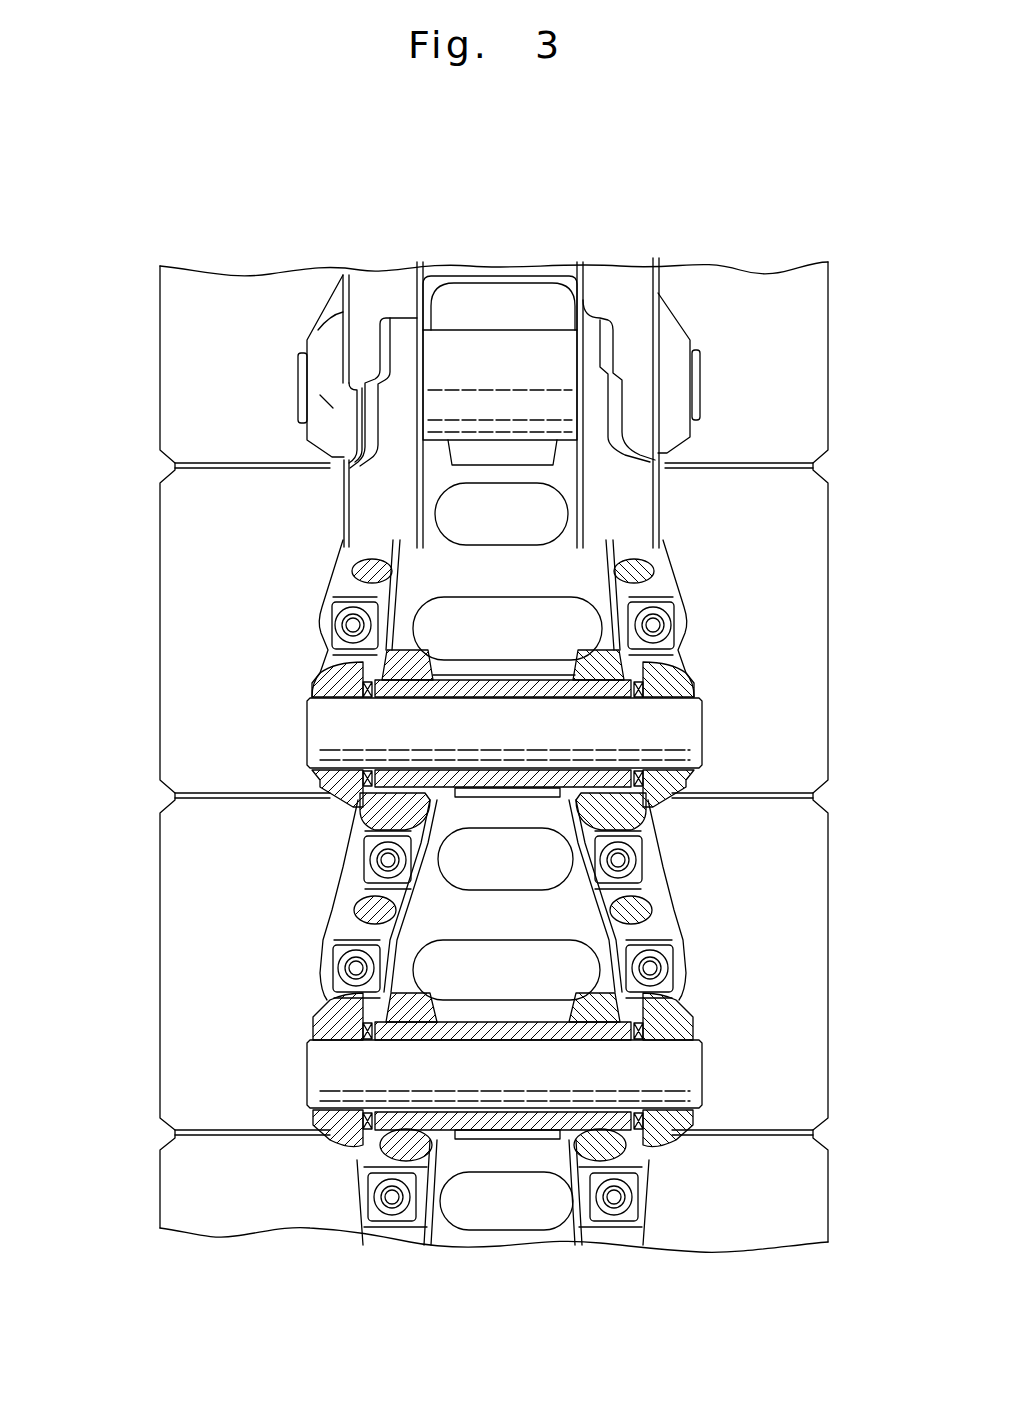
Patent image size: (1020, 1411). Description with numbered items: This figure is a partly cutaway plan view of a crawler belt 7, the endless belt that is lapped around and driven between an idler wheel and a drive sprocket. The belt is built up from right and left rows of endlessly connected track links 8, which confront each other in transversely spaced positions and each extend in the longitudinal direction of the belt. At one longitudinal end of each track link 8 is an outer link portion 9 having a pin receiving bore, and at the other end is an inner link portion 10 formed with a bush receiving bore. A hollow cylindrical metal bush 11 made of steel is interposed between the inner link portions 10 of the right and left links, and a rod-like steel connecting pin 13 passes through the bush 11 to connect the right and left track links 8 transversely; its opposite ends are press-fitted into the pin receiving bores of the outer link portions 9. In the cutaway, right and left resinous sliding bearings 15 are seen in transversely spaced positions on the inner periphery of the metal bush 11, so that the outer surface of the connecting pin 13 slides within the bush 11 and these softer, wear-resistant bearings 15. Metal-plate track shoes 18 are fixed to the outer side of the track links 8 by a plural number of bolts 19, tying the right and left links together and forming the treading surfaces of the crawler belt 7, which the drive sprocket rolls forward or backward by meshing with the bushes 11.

The crawler belt 7 is at (731, 256).
The track link 8 is at (328, 288).
The outer link portion 9 is at (322, 370).
The inner link portion 10 is at (608, 330).
The metal bush 11 is at (462, 345).
The connecting pin 13 is at (352, 722).
The resinous sliding bearing 15 is at (390, 1036).
The track shoe 18 is at (205, 953).
The bolt 19 is at (388, 860).